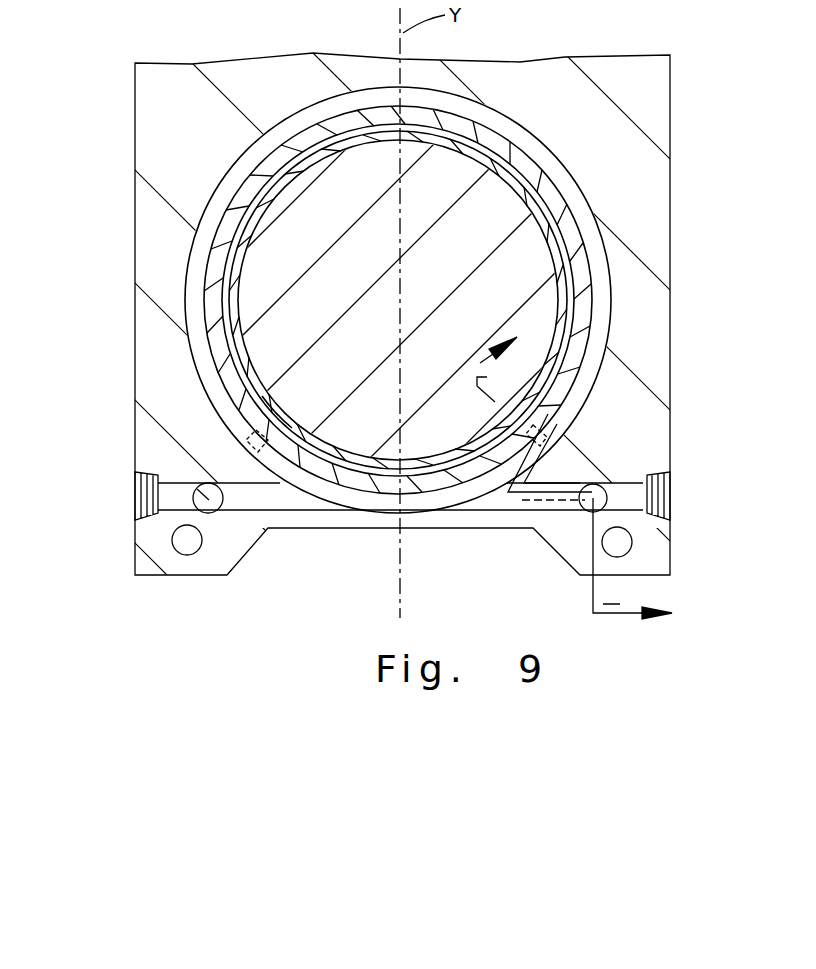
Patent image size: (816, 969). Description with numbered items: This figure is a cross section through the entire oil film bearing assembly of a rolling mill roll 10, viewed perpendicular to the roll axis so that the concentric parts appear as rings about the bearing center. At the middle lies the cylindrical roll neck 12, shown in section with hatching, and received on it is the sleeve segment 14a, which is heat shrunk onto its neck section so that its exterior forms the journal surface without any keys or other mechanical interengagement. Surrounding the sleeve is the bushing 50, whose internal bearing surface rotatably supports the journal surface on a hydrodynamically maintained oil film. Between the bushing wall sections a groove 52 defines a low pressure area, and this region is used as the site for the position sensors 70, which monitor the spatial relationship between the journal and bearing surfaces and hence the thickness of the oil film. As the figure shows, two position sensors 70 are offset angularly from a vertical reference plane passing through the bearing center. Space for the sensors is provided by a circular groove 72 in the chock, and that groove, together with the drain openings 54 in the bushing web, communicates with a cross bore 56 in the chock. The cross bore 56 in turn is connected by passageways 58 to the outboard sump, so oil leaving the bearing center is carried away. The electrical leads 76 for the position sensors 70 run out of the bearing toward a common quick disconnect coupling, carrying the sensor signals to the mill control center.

The circular groove 72 is at (193, 258).
The bushing 50 is at (530, 170).
The groove 52 is at (573, 325).
The roll neck 12 is at (437, 290).
The sleeve segment 14a is at (268, 408).
The drain openings 54 is at (392, 462).
The position sensors 70 is at (560, 426).
The passageways 58 is at (607, 483).
The cross bore 56 is at (268, 503).
The electrical leads 76 is at (338, 513).
The roll 10 is at (595, 470).